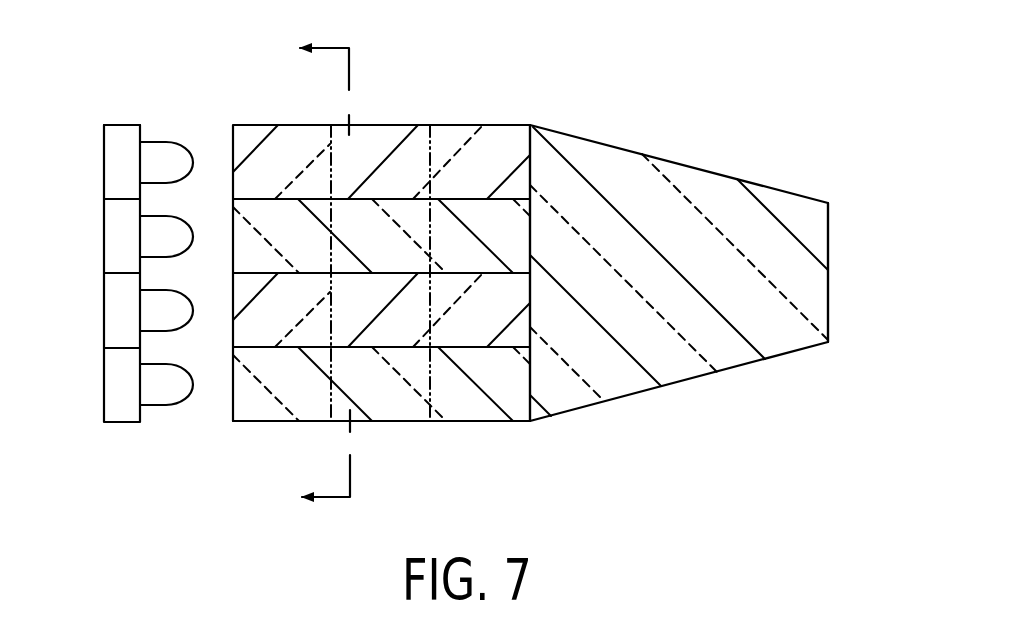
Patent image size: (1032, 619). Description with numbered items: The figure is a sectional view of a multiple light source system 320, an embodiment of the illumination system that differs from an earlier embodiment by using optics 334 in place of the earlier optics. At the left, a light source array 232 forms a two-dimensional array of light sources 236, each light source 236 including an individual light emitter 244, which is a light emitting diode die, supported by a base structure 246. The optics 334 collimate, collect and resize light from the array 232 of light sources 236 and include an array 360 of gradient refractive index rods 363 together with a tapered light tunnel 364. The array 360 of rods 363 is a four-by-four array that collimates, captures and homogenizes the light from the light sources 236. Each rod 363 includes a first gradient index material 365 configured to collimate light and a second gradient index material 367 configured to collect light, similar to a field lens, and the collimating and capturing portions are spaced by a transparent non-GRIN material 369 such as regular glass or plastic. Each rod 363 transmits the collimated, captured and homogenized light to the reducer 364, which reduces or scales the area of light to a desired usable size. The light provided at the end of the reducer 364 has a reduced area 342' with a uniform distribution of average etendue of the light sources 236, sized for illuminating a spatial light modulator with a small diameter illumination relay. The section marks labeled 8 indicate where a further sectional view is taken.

The light source array 232 is at (115, 278).
The light source 236 is at (125, 238).
The light emitter 244 is at (175, 157).
The base structure 246 is at (123, 125).
The multiple light source system 320 is at (545, 48).
The optics 334 is at (474, 116).
The array of gradient refractive index rods 360 is at (408, 258).
The gradient refractive index rod 363 is at (497, 421).
The tapered light tunnel 364 is at (676, 162).
The first gradient index material 365 is at (290, 142).
The second gradient index material 367 is at (442, 135).
The transparent non-GRIN material 369 is at (388, 407).
The reduced area 342' is at (880, 272).
The section line 8- 8 is at (324, 274).